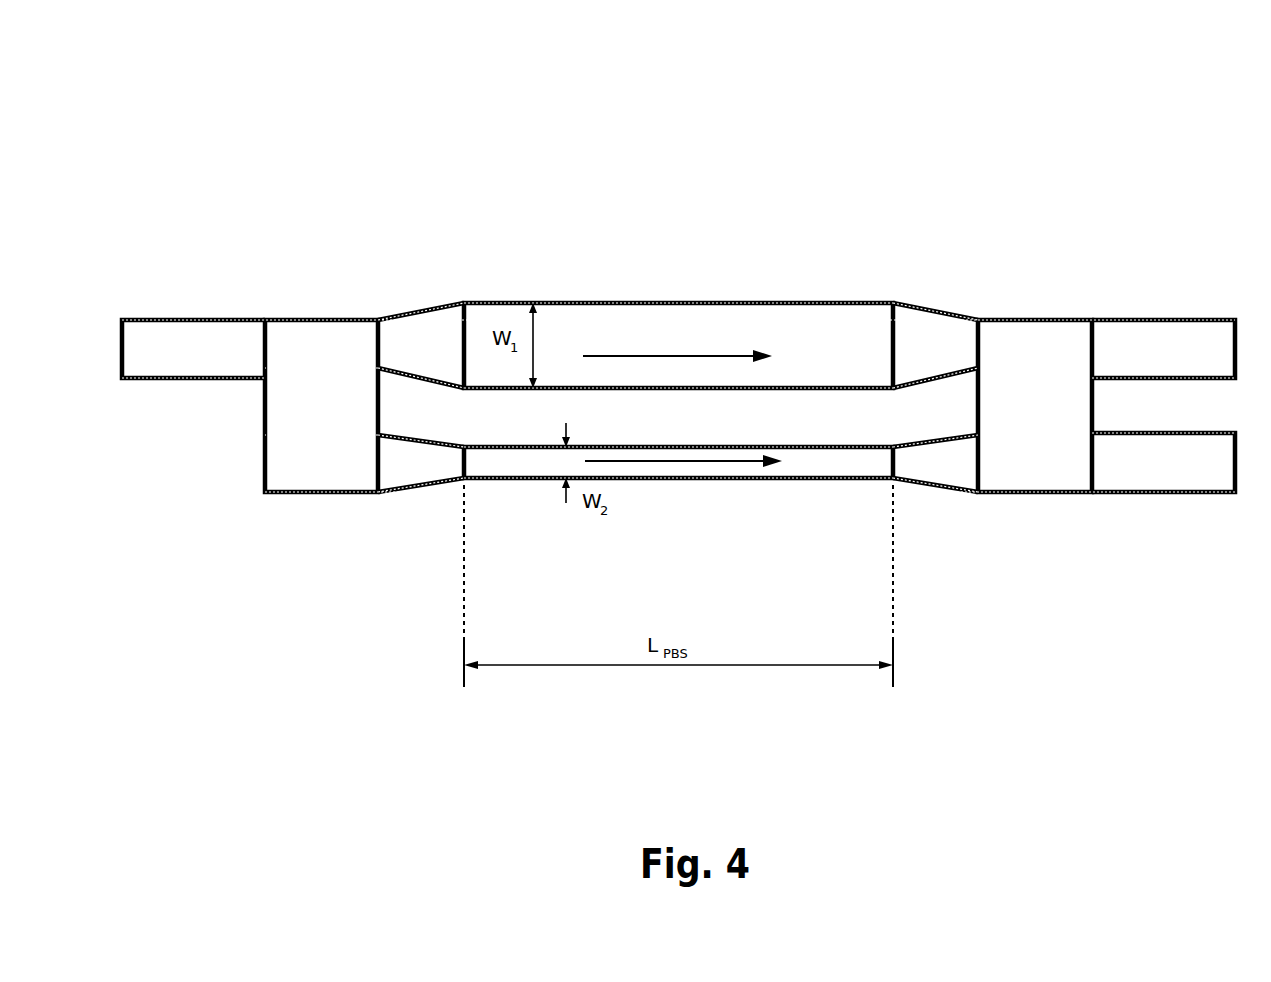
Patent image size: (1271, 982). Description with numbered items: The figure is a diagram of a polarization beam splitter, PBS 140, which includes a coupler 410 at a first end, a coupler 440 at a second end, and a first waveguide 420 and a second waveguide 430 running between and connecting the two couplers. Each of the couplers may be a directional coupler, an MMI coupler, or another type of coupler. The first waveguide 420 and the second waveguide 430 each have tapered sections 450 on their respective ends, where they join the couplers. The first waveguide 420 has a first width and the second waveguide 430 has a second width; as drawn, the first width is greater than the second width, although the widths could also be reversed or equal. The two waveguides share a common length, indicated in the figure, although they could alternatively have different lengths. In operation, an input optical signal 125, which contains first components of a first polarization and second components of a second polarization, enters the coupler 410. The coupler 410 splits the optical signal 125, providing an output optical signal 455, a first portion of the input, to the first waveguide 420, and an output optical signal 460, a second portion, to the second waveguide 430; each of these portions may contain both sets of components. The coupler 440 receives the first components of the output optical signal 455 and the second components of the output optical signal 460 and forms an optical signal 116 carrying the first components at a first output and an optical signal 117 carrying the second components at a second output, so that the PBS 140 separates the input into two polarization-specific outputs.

The polarization beam splitter 140 is at (226, 60).
The optical signal 125 is at (175, 383).
The coupler 410 is at (298, 318).
The tapered sections 450 is at (430, 307).
The first waveguide 420 is at (652, 303).
The second waveguide 430 is at (862, 480).
The coupler 440 is at (1028, 318).
The optical signal 116 is at (1158, 318).
The optical signal 117 is at (1205, 494).
The output optical signal 455 is at (642, 356).
The output optical signal 460 is at (635, 460).